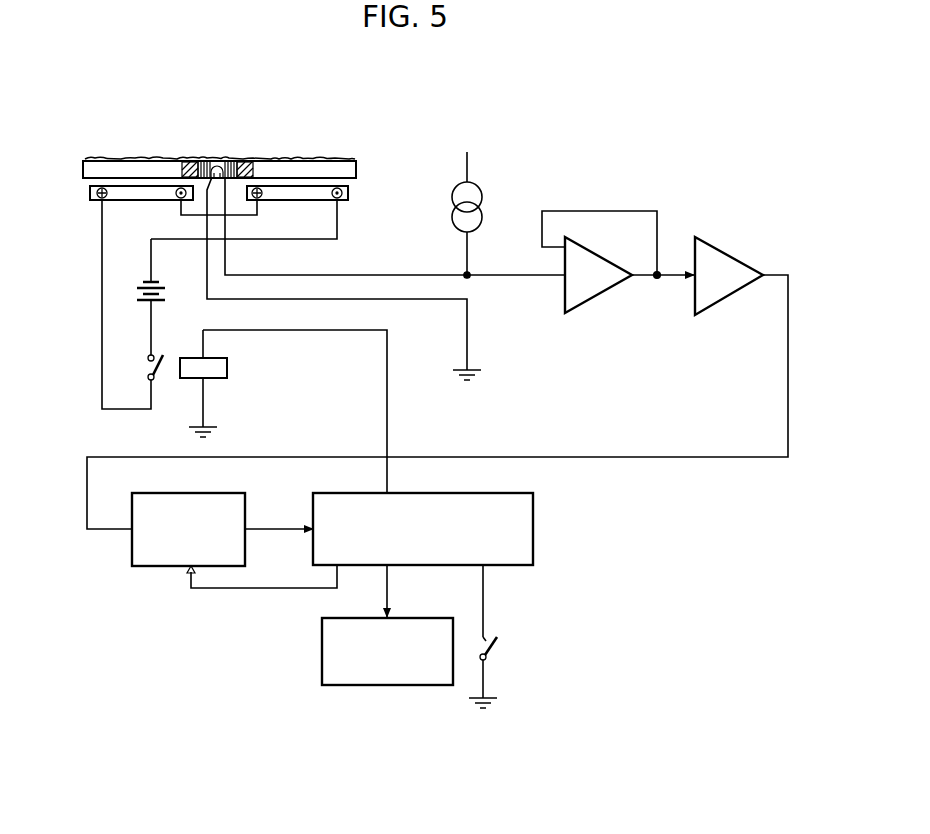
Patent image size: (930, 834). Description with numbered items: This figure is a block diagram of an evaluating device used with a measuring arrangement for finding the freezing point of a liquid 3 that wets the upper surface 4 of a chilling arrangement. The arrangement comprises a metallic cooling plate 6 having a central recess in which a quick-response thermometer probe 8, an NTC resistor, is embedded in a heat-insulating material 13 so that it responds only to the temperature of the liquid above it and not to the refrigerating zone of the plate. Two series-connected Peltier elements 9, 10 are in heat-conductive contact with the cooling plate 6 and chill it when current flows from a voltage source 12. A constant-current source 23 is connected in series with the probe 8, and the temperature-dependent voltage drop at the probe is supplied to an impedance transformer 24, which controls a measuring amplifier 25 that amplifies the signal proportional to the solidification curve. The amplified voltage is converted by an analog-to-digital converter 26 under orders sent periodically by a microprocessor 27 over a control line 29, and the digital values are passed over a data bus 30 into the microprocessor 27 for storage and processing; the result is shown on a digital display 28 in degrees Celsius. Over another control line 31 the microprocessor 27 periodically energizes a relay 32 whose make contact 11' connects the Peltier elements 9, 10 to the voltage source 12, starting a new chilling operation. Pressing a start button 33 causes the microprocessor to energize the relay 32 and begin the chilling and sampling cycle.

The liquid 3 is at (126, 157).
The upper surface 4 is at (85, 158).
The metallic cooling plate 6 is at (316, 172).
The quick-response thermometer probe 8 is at (222, 162).
The Peltier element 9 is at (130, 194).
The Peltier element 10 is at (313, 192).
The make contact 11' is at (110, 366).
The voltage source 12 is at (130, 293).
The heat-insulating material 13 is at (203, 160).
The constant-current source 23 is at (482, 212).
The impedance transformer 24 is at (590, 283).
The measuring amplifier 25 is at (726, 285).
The analog-to-digital converter 26 is at (229, 508).
The microprocessor 27 is at (523, 549).
The digital display 28 is at (387, 680).
The control line 29 is at (253, 589).
The data bus 30 is at (272, 529).
The control line 31 is at (386, 380).
The relay 32 is at (212, 367).
The start button 33 is at (502, 647).